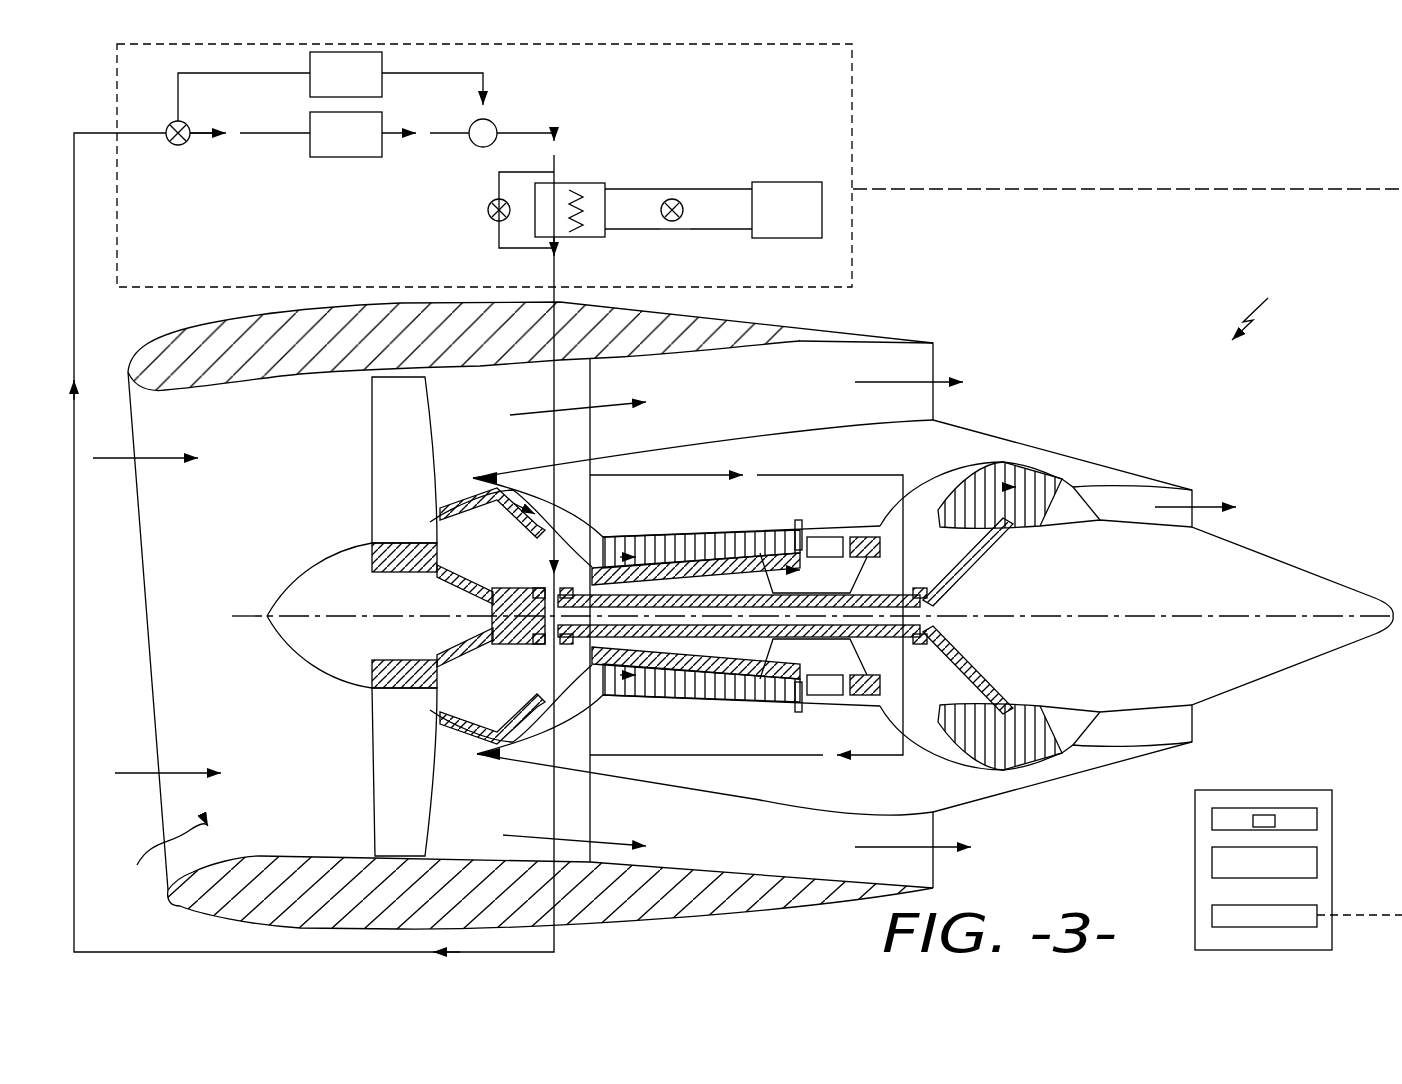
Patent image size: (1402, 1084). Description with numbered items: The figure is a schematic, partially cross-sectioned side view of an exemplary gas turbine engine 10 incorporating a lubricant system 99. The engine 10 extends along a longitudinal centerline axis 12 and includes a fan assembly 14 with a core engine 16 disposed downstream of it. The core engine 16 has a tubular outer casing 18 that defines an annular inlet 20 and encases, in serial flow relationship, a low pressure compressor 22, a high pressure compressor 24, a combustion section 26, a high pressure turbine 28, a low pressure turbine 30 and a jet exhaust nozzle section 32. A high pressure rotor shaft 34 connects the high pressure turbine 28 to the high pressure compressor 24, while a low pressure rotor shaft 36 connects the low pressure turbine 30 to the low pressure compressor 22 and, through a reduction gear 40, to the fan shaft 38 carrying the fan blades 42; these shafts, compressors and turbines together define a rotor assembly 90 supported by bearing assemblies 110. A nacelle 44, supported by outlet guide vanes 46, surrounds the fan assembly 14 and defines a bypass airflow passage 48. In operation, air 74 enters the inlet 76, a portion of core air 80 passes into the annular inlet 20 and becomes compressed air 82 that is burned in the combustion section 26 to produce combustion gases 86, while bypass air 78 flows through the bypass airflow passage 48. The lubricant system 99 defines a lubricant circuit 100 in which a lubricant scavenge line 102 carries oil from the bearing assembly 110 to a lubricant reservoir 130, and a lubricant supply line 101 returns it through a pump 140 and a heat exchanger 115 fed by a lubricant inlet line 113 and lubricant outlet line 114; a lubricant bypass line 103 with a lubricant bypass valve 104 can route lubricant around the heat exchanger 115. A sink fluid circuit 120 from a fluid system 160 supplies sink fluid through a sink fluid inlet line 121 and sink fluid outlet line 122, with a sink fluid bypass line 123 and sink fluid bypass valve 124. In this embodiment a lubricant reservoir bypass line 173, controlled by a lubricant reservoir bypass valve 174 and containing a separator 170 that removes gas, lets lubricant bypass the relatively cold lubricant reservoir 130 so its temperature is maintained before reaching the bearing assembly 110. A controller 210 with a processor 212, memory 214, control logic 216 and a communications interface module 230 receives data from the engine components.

The gas turbine engine 10 is at (1269, 307).
The longitudinal centerline axis 12 is at (1108, 608).
The fan assembly 14 is at (456, 385).
The core engine 16 is at (805, 400).
The outer casing 18 is at (778, 805).
The annular inlet 20 is at (480, 740).
The low pressure compressor 22 is at (540, 742).
The high pressure compressor 24 is at (622, 688).
The combustion section 26 is at (817, 693).
The high pressure turbine 28 is at (907, 700).
The low pressure turbine 30 is at (1023, 773).
The jet exhaust nozzle section 32 is at (1110, 740).
The high pressure rotor shaft 34 is at (903, 582).
The low pressure rotor shaft 36 is at (985, 555).
The fan shaft 38 is at (443, 578).
The reduction gear 40 is at (542, 585).
The fan blades 42 is at (385, 452).
The nacelle 44 is at (393, 305).
The outlet guide vanes 46 is at (572, 372).
The bypass airflow passage 48 is at (623, 396).
The flow of air 74 is at (165, 455).
The inlet 76 is at (161, 863).
The bypass air 78 is at (945, 378).
The core air 80 is at (490, 490).
The compressed air 82 is at (610, 537).
The combustion gases 86 is at (877, 517).
The rotor assembly 90 is at (378, 552).
The lubricant system 99 is at (853, 162).
The lubricant circuit 100 is at (213, 137).
The lubricant supply line 101 is at (410, 140).
The lubricant scavenge line 102 is at (285, 140).
The lubricant bypass line 103 is at (495, 172).
The lubricant bypass valve 104 is at (486, 212).
The bearing assembly 110 is at (543, 650).
The lubricant inlet line 113 is at (558, 145).
The lubricant outlet line 114 is at (570, 245).
The heat exchanger 115 is at (590, 183).
The sink fluid circuit 120 is at (692, 170).
The sink fluid inlet line 121 is at (640, 230).
The sink fluid outlet line 122 is at (730, 185).
The sink fluid bypass line 123 is at (690, 222).
The sink fluid bypass valve 124 is at (684, 224).
The lubricant reservoir 130 is at (346, 134).
The pump 140 is at (489, 125).
The fluid system 160 is at (787, 210).
The separator 170 is at (346, 74).
The lubricant reservoir bypass line 173 is at (172, 104).
The lubricant reservoir bypass valve 174 is at (192, 128).
The controller 210 is at (1230, 797).
The processor 212 is at (1293, 860).
The memory 214 is at (1293, 818).
The control logic 216 is at (1260, 812).
The communications interface module 230 is at (1293, 910).